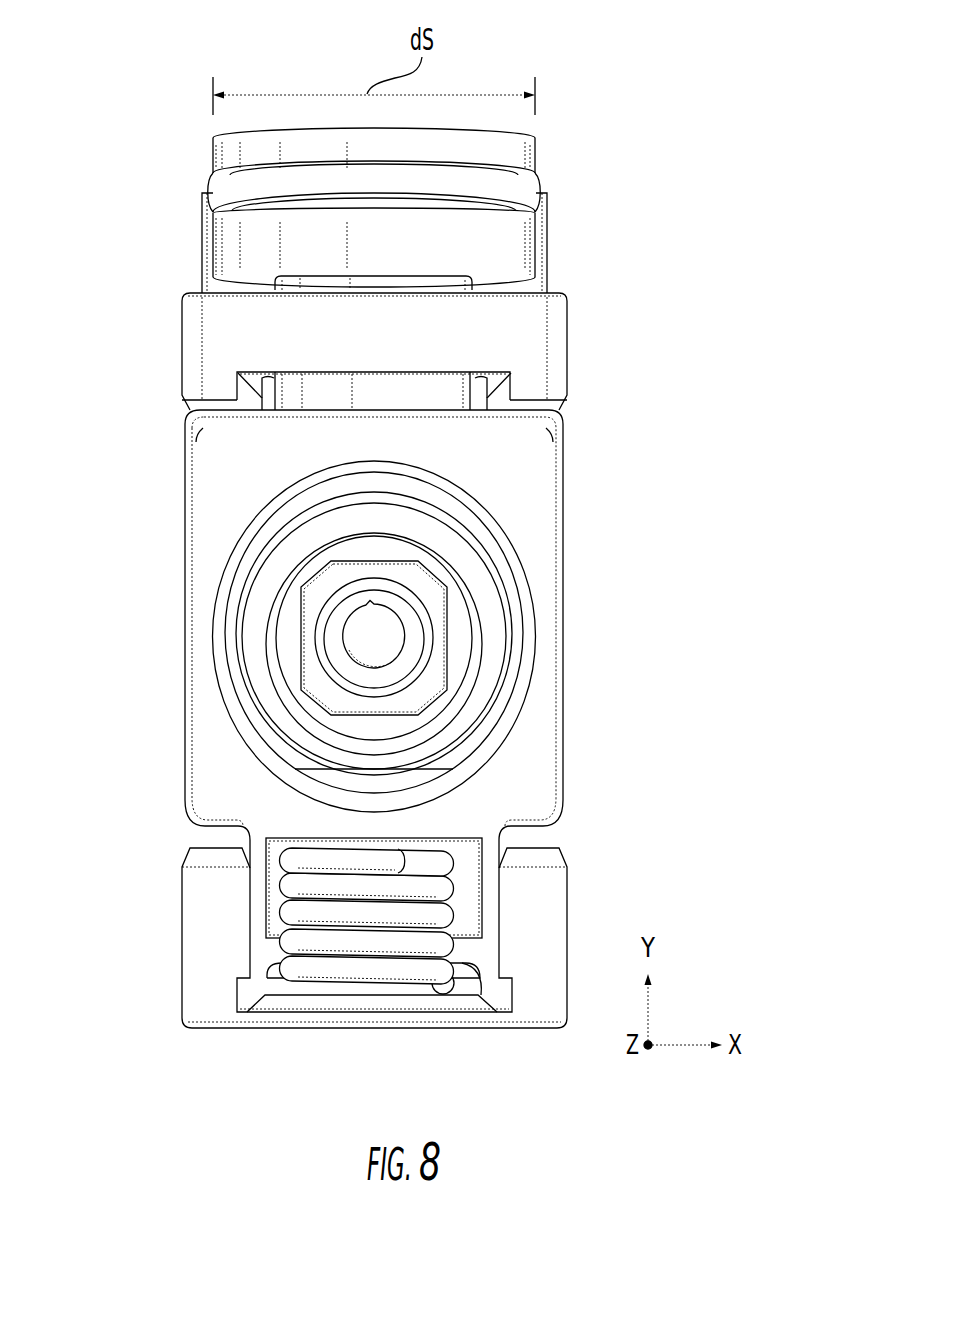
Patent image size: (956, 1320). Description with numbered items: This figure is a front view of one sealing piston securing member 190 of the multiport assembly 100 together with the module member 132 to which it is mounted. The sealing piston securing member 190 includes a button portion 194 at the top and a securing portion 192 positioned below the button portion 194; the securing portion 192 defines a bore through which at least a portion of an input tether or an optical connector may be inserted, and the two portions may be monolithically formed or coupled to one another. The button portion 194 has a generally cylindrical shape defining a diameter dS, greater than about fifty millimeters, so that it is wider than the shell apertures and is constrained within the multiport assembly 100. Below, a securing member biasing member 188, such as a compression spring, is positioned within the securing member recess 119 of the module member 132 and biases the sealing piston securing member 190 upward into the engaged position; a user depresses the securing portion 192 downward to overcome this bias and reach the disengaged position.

The multiport assembly 100 is at (443, 561).
The securing member recess 119 is at (492, 990).
The module member 132 is at (586, 314).
The securing member biasing member 188 is at (368, 970).
The sealing piston securing member 190 is at (549, 145).
The securing portion 192 is at (160, 538).
The button portion 194 is at (178, 223).